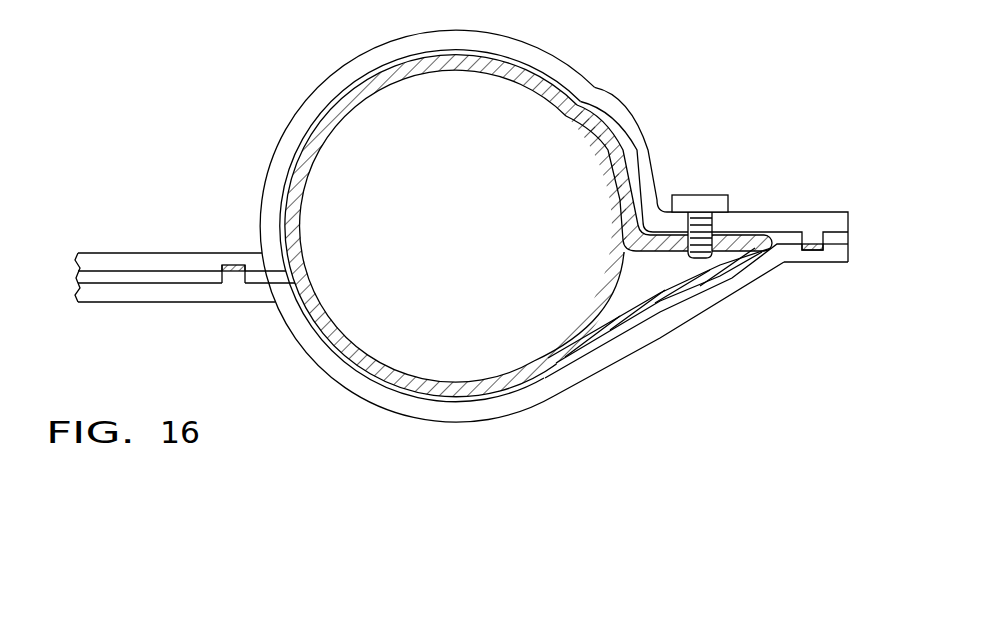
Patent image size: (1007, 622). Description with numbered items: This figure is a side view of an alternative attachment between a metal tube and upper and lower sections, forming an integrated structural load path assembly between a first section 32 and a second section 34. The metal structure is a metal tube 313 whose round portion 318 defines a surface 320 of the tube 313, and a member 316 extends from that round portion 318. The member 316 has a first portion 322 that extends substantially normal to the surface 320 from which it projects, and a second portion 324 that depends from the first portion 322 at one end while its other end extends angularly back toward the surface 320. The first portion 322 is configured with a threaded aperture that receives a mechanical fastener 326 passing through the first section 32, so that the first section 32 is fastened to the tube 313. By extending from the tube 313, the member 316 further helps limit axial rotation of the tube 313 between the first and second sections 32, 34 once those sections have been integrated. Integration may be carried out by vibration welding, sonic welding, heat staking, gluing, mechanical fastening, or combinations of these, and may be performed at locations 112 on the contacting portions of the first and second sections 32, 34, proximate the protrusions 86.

The member 316 is at (618, 328).
The metal tube 313 is at (298, 148).
The round portion 318 is at (590, 95).
The first section 32 is at (800, 212).
The first portion 322 is at (750, 242).
The second portion 324 is at (707, 280).
The second section 34 is at (670, 328).
The locations on contacting sections 112 is at (127, 312).
The surface 320 is at (283, 283).
The protrusions 86 is at (230, 265).
The mechanical fastener 326 is at (683, 194).